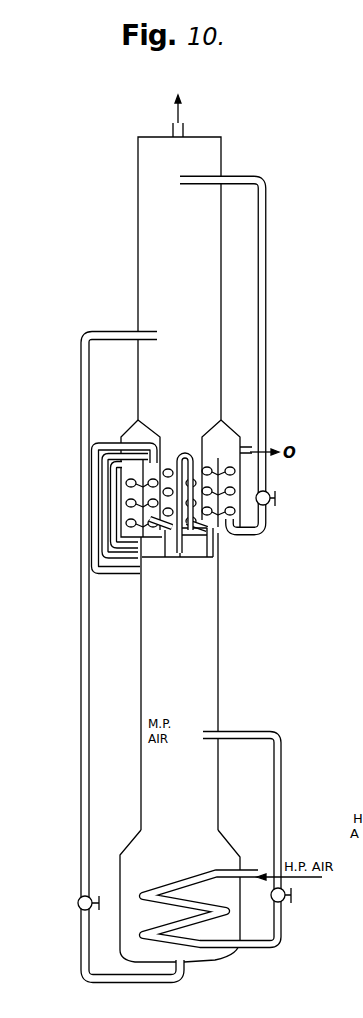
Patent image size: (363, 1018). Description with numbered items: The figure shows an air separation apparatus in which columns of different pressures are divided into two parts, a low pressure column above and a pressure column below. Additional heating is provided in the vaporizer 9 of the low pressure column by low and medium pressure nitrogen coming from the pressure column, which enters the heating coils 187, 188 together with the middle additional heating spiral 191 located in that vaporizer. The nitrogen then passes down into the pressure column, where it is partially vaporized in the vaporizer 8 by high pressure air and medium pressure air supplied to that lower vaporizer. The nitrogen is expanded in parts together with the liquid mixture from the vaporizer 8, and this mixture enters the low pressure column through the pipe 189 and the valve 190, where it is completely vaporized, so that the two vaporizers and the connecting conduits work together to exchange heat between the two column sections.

The vaporizer 8 is at (180, 896).
The vaporizer 9 is at (186, 316).
The heating coil 187 is at (124, 582).
The heating coil 188 is at (93, 551).
The pipe 189 is at (82, 945).
The valve 190 is at (78, 898).
The middle additional heating spiral 191 is at (170, 560).